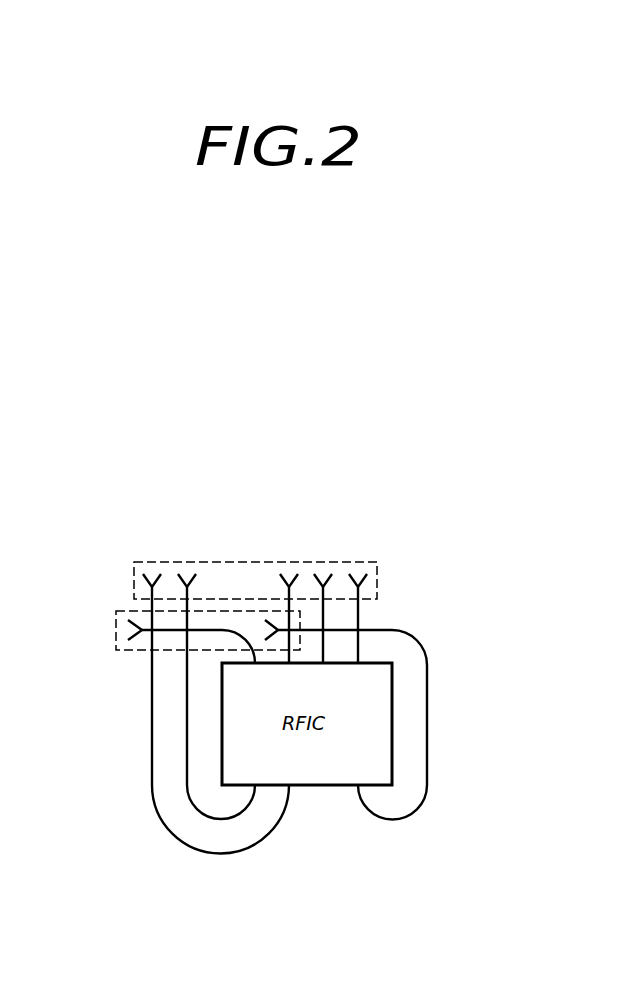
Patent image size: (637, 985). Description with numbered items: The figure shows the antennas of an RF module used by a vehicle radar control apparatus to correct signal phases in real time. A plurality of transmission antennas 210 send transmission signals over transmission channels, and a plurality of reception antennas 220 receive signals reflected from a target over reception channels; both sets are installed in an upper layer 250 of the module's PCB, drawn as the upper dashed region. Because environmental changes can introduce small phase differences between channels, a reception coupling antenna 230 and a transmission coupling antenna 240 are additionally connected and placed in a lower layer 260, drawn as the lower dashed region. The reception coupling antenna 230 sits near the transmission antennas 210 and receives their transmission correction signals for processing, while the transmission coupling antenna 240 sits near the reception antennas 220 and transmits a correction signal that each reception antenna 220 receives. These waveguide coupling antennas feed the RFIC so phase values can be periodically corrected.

The transmission antennas 210 is at (192, 591).
The reception antennas 220 is at (361, 594).
The reception coupling antenna 230 is at (215, 634).
The transmission coupling antenna 240 is at (428, 723).
The (N+1)-th layer 250 is at (265, 562).
The N-th layer 260 is at (116, 629).